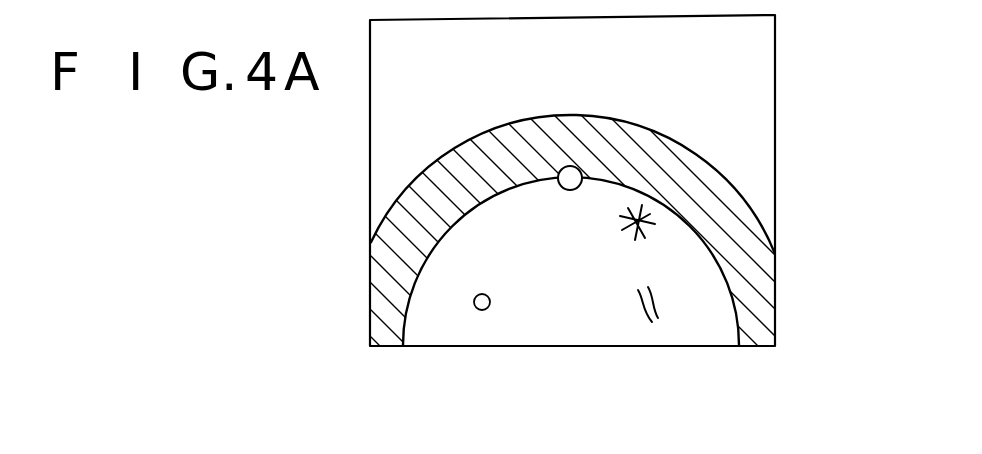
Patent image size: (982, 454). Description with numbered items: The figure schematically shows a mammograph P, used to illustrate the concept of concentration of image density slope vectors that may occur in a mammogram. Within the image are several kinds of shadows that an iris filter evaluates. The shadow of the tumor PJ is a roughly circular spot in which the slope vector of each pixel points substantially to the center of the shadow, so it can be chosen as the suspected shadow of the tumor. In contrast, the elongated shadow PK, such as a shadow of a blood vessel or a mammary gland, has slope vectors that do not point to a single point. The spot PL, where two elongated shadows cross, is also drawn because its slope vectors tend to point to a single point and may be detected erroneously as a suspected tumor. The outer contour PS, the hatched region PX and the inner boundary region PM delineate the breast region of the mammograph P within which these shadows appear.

The mammograph P is at (778, 86).
The outer contour PS is at (732, 184).
The hatched region PX is at (751, 243).
The inner boundary region PM is at (421, 265).
The shadow of the tumor PJ is at (478, 311).
The spot where two elongated shadows cross PL is at (626, 232).
The elongated shadow PK is at (654, 312).